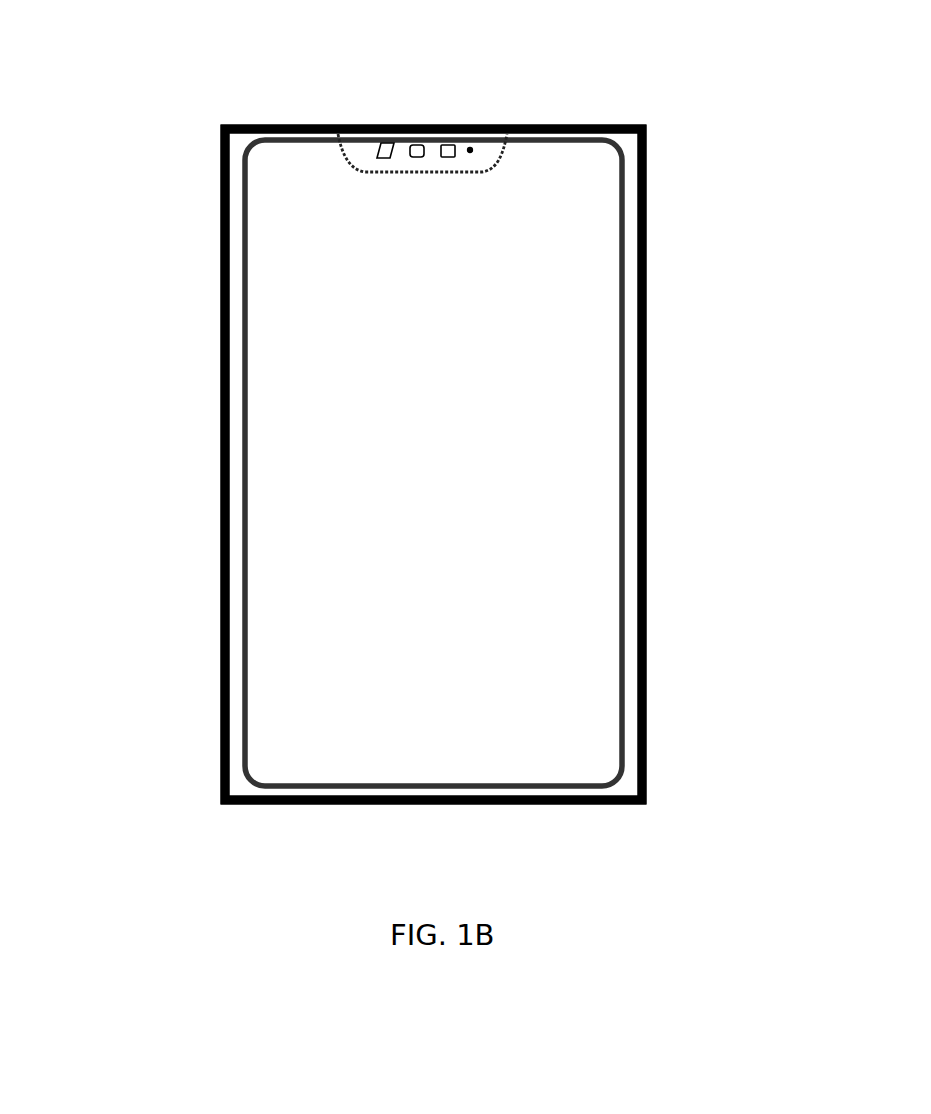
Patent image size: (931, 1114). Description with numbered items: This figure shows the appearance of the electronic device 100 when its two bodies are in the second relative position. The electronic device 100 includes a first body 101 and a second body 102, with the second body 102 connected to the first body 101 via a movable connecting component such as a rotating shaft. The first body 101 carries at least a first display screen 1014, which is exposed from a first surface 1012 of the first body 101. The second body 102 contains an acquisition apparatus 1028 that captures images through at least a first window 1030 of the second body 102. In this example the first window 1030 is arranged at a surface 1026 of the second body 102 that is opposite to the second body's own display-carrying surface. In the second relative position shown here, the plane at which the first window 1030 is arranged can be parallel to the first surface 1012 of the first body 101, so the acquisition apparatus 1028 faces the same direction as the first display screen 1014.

The electronic device 100 is at (112, 194).
The first body 101 is at (513, 464).
The first surface of the first body 1012 is at (528, 463).
The first display screen 1014 is at (528, 463).
The second body 102 is at (361, 118).
The acquisition apparatus 1028 is at (524, 87).
The first window 1030 is at (432, 93).
The surface opposite to the first surface of the second body 1026 is at (545, 110).